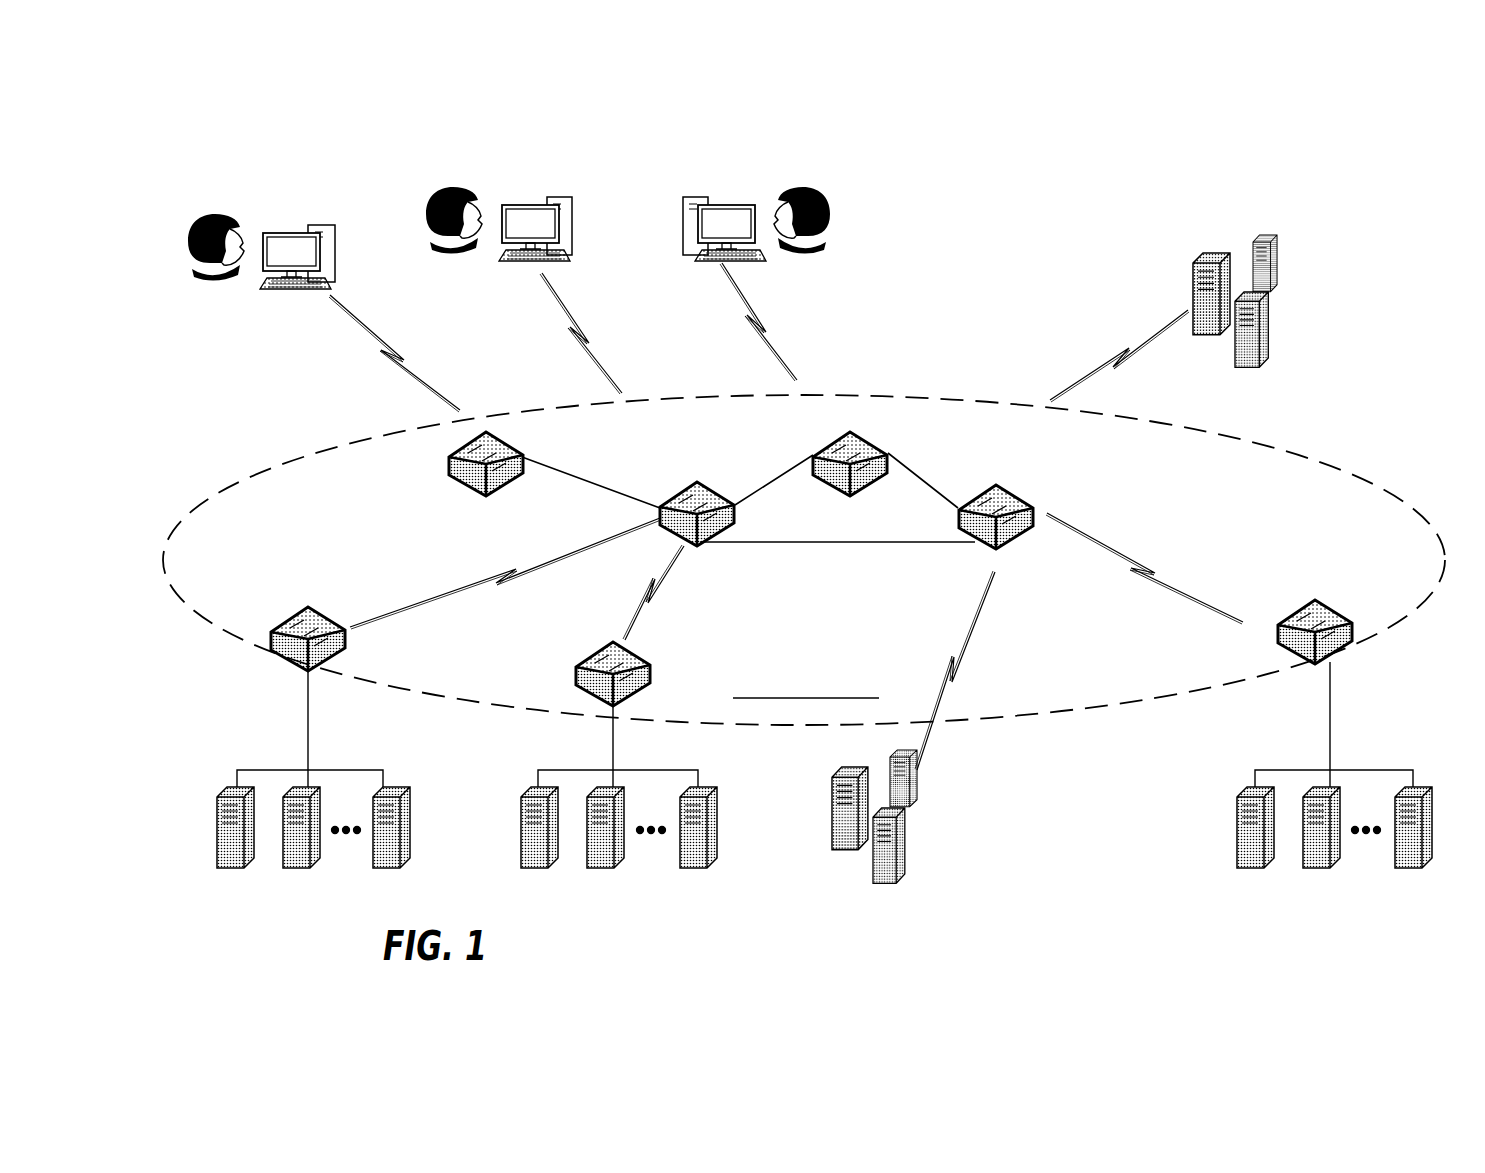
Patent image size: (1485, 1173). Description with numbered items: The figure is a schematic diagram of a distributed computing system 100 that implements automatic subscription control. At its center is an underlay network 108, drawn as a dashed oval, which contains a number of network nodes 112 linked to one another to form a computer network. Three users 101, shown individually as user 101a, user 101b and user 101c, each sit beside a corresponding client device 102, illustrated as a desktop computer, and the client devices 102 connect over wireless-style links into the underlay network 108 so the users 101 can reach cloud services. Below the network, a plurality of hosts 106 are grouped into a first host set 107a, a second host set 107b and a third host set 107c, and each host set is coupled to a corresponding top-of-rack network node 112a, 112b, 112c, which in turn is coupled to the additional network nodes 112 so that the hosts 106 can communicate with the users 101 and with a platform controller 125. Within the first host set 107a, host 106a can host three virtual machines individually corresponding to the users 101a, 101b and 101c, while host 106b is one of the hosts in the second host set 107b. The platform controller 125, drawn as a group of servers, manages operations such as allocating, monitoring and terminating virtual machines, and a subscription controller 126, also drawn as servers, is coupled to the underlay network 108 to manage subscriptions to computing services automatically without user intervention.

The distributed computing system 100 is at (1347, 187).
The users 101 is at (185, 157).
The user 101a is at (175, 228).
The user 101b is at (415, 200).
The user 101c is at (845, 200).
The client devices 102 is at (310, 225).
The hosts 106 is at (388, 792).
The host 106a is at (225, 795).
The host 106b is at (700, 790).
The first host set 107a is at (180, 740).
The second host set 107b is at (527, 762).
The third host set 107c is at (1380, 740).
The underlay network 108 is at (790, 721).
The network nodes 112 is at (458, 447).
The top-of-rack network node 112a is at (285, 617).
The top-of-rack network node 112b is at (603, 648).
The top-of-rack network node 112c is at (1340, 607).
The platform controller 125 is at (852, 939).
The subscription controller 126 is at (1212, 422).